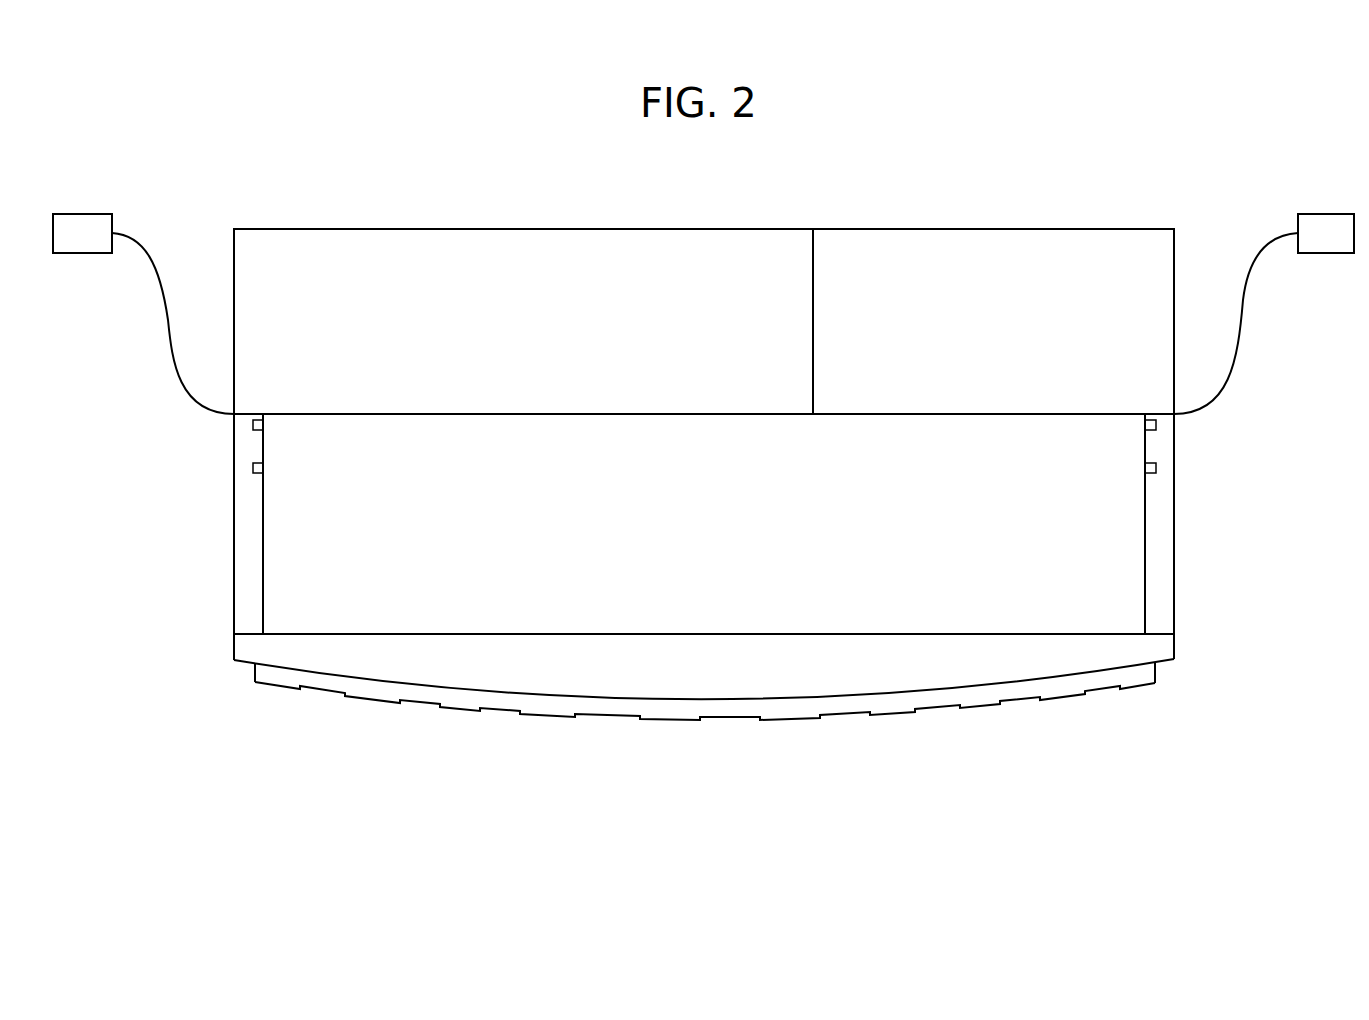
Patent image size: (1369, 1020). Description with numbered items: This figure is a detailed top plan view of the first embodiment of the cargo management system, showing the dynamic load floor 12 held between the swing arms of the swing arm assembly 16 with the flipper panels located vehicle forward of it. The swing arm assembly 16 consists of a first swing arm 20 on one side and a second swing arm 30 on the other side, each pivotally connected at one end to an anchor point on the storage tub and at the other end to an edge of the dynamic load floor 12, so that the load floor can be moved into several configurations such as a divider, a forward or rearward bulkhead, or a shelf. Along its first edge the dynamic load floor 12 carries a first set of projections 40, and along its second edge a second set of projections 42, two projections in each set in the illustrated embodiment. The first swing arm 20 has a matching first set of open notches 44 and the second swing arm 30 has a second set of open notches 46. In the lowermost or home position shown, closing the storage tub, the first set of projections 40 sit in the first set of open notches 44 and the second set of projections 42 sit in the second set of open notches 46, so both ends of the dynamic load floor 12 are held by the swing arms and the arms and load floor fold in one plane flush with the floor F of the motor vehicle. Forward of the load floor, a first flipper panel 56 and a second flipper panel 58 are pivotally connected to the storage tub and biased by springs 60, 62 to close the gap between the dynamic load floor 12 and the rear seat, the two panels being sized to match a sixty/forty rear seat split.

The dynamic load floor 12 is at (704, 524).
The swing arm assembly 16 is at (172, 669).
The first swing arm 20 is at (243, 541).
The second swing arm 30 is at (1162, 537).
The first set of projections 40 is at (140, 471).
The second set of projections 42 is at (1145, 425).
The first set of open notches 44 is at (253, 425).
The second set of open notches 46 is at (1157, 425).
The first flipper panel 56 is at (663, 321).
The second flipper panel 58 is at (983, 326).
The spring 60 is at (75, 217).
The spring 62 is at (1320, 217).
The floor F is at (707, 673).